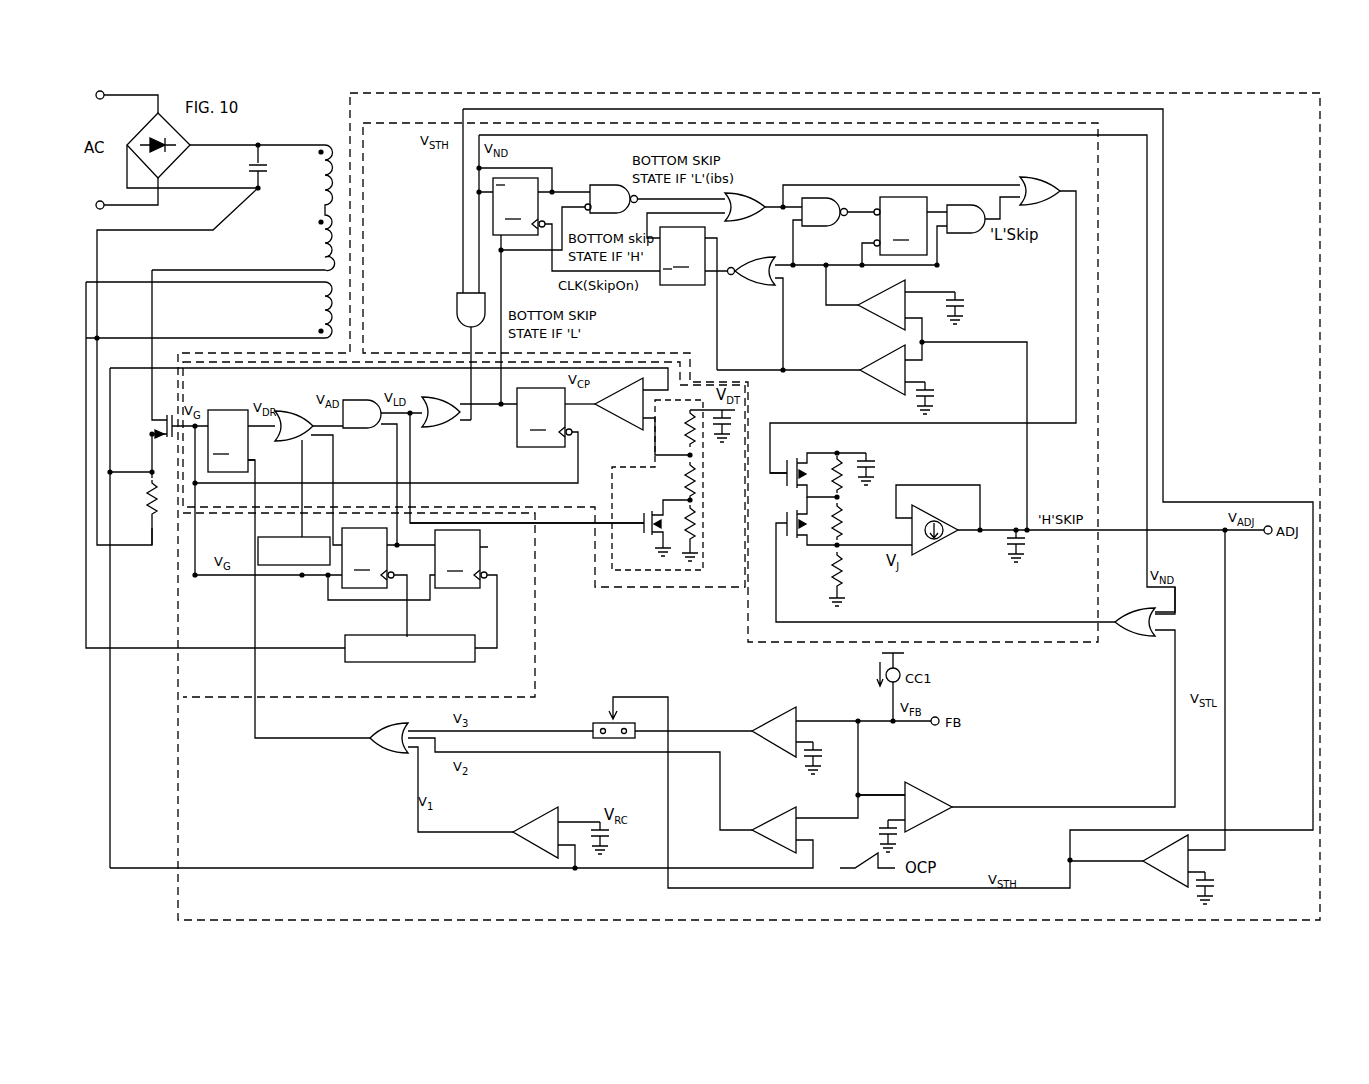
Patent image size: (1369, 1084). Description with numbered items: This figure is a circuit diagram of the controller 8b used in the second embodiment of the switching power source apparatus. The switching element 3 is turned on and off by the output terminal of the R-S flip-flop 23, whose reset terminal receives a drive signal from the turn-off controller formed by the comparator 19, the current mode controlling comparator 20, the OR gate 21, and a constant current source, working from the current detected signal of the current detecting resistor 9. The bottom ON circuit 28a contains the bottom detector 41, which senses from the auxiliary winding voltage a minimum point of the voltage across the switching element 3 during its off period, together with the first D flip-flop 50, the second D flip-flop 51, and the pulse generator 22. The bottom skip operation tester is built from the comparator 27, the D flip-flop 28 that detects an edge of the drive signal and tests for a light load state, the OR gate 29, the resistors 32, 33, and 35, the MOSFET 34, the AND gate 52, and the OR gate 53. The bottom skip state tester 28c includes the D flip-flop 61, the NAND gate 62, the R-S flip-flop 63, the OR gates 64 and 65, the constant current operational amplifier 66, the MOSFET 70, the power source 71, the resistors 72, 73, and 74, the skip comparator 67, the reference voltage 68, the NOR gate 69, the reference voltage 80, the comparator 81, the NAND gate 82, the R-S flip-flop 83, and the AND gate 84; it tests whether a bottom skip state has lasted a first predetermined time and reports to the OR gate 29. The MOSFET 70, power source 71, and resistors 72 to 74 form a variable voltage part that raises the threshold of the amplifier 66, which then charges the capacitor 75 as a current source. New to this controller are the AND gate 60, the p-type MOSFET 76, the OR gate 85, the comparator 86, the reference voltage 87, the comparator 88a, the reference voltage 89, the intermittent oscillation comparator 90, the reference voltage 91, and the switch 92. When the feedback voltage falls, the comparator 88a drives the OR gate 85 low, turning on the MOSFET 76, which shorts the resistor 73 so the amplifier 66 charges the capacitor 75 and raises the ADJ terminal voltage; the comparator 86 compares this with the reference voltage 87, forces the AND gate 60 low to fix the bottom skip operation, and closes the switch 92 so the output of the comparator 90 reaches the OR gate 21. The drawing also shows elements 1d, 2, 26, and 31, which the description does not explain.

The smoothing capacitor 1d is at (234, 166).
The transformer 2 is at (334, 138).
The switching element 3 is at (152, 374).
The controller 8b is at (1320, 108).
The current detecting resistor 9 is at (133, 511).
The comparator 19 is at (548, 806).
The current mode controlling comparator 20 is at (770, 852).
The OR gate 21 is at (393, 754).
The pulse generator 22 is at (287, 566).
The R-S flip-flop 23 is at (241, 441).
The detection voltage input 26 is at (743, 408).
The comparator 27 is at (628, 442).
The D flip-flop 28 is at (509, 431).
The bottom ON circuit 28a is at (226, 700).
The bottom skip state tester 28c is at (1100, 128).
The OR gate 29 is at (440, 400).
The voltage divider circuit 31 is at (712, 562).
The resistor 32 is at (684, 436).
The resistor 33 is at (680, 485).
The MOSFET 34 is at (652, 544).
The resistor 35 is at (700, 528).
The bottom detector 41 is at (346, 635).
The first D flip-flop 50 is at (478, 589).
The second D flip-flop 51 is at (381, 582).
The AND gate 52 is at (362, 432).
The OR gate 53 is at (297, 442).
The AND gate 60 is at (453, 311).
The D flip-flop 61 is at (576, 291).
The NAND gate 62 is at (615, 185).
The R-S flip-flop 63 is at (686, 291).
The OR gate 64 is at (747, 190).
The OR gate 65 is at (1052, 206).
The constant current operational amplifier 66 is at (936, 556).
The skip comparator 67 is at (866, 396).
The reference voltage 68 is at (945, 398).
The NOR gate 69 is at (752, 286).
The MOSFET 70 is at (789, 462).
The power source 71 is at (884, 469).
The resistor 72 is at (837, 457).
The resistor 73 is at (855, 517).
The resistor 74 is at (854, 574).
The capacitor 75 is at (1033, 553).
The p-type MOSFET 76 is at (790, 545).
The reference voltage 80 is at (973, 308).
The comparator 81 is at (856, 300).
The NAND gate 82 is at (815, 230).
The R-S flip-flop 83 is at (904, 231).
The AND gate 84 is at (958, 236).
The OR gate 85 is at (1137, 640).
The comparator 86 is at (1160, 876).
The reference voltage 87 is at (1229, 889).
The comparator 88a is at (934, 792).
The reference voltage 89 is at (867, 836).
The intermittent oscillation comparator 90 is at (766, 745).
The reference voltage 91 is at (822, 770).
The switch 92 is at (596, 719).